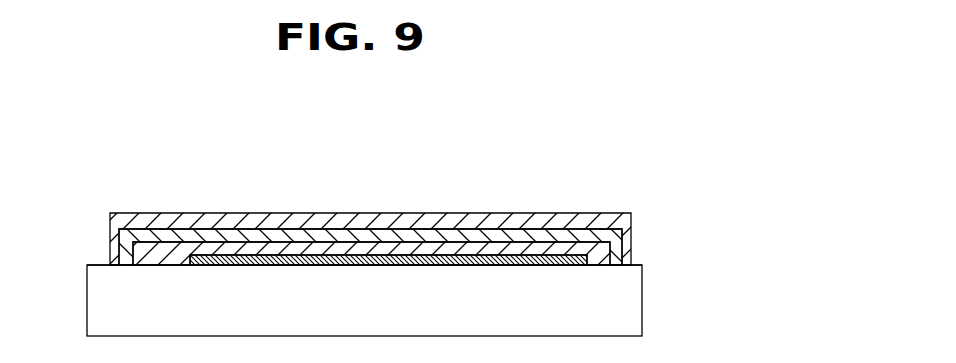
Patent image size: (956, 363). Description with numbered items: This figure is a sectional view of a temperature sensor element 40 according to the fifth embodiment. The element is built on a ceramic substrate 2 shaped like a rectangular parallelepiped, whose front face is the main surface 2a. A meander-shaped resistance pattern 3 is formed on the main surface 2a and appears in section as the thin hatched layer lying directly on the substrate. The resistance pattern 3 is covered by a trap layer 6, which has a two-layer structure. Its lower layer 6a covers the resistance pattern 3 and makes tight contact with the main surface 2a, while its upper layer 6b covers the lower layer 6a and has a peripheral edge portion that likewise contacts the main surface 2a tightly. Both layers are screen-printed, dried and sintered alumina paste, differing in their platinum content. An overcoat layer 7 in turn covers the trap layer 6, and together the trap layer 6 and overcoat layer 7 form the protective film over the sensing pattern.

The temperature sensor element 40 is at (112, 168).
The ceramic substrate 2 is at (632, 306).
The main surface 2a is at (104, 265).
The resistance pattern 3 is at (289, 256).
The trap layer 6 is at (697, 155).
The lower layer 6a is at (603, 247).
The upper layer 6b is at (592, 233).
The overcoat layer 7 is at (469, 213).